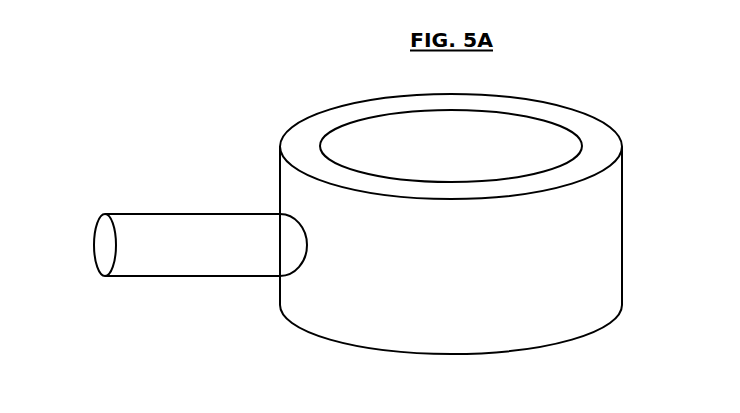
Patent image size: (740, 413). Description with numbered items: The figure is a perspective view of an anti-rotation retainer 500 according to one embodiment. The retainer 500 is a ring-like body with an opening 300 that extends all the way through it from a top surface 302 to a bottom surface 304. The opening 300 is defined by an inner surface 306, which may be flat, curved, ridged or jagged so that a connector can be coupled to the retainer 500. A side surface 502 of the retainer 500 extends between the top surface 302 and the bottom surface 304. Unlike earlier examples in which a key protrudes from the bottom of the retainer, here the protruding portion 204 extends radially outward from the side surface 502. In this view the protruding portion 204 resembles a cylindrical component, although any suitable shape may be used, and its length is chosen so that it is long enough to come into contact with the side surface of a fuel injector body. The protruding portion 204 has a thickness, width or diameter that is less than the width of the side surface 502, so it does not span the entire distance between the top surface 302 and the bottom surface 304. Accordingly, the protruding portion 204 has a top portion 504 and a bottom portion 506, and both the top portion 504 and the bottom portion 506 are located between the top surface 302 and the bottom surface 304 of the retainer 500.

The anti-rotation retainer 500 is at (232, 72).
The opening 300 is at (484, 227).
The top surface 302 is at (538, 112).
The bottom surface 304 is at (555, 345).
The inner surface 306 is at (578, 152).
The protruding portion 204 is at (165, 230).
The side surface 502 is at (285, 178).
The top portion 504 is at (145, 212).
The bottom portion 506 is at (143, 278).